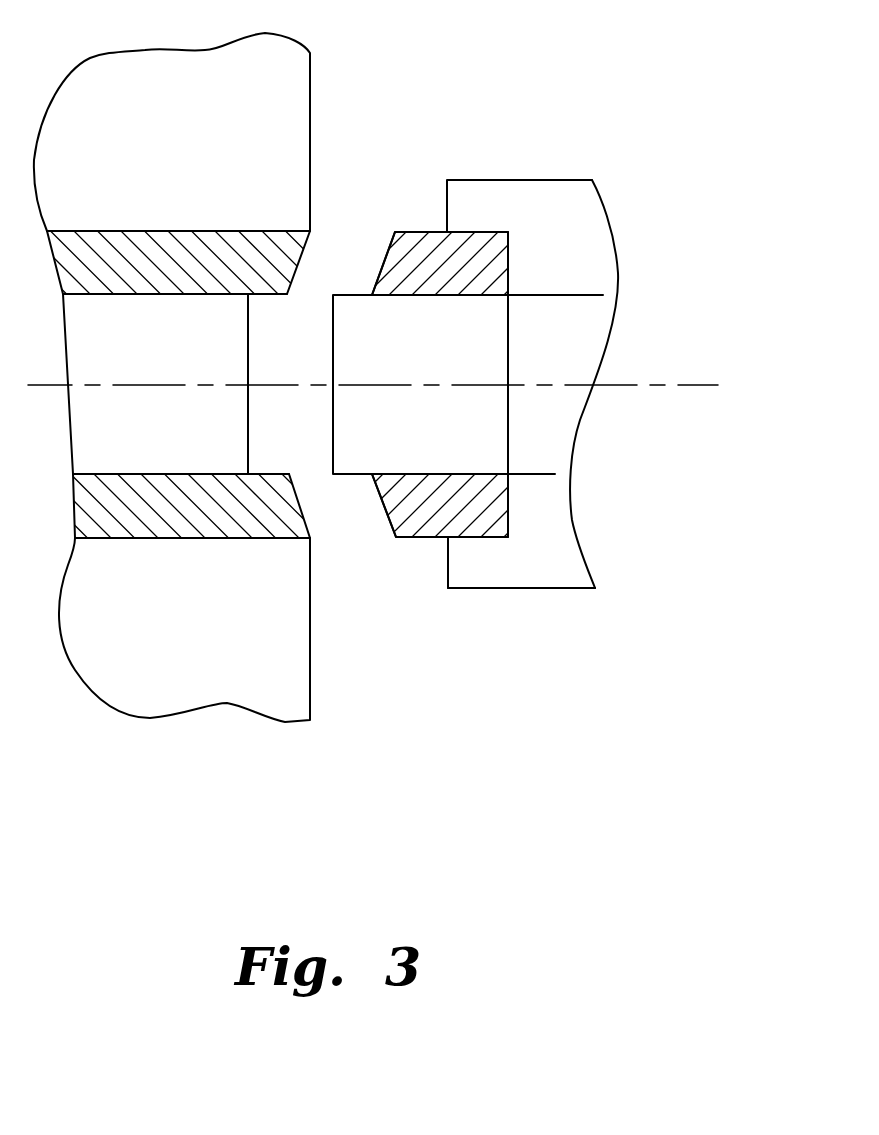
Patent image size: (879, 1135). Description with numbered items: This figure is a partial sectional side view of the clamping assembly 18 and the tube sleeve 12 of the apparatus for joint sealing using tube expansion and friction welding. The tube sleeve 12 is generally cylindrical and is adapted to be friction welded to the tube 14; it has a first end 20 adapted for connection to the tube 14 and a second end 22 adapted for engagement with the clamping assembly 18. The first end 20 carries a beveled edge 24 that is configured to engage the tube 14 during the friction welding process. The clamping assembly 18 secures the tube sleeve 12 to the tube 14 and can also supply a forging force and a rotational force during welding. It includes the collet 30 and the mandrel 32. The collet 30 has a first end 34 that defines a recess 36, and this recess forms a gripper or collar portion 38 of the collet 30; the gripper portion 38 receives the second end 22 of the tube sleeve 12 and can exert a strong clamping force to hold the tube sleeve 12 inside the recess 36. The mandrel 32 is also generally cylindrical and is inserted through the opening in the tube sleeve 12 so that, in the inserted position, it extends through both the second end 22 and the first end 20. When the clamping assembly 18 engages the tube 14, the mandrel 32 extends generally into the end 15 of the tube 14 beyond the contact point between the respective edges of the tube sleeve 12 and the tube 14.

The tube sleeve 12 is at (413, 240).
The tube 14 is at (208, 512).
The end of the tube 15 is at (285, 517).
The clamping assembly 18 is at (497, 604).
The first end 20 is at (376, 259).
The second end 22 is at (510, 425).
The beveled edge 24 is at (390, 517).
The collet 30 is at (565, 565).
The mandrel 32 is at (490, 352).
The first end 34 is at (509, 252).
The recess 36 is at (510, 520).
The gripper portion 38 is at (518, 567).